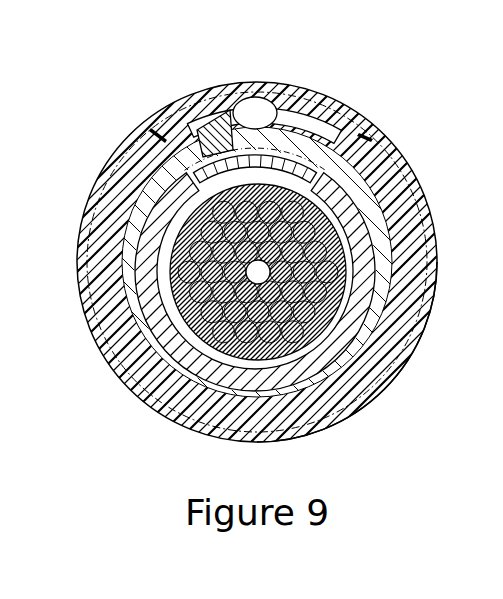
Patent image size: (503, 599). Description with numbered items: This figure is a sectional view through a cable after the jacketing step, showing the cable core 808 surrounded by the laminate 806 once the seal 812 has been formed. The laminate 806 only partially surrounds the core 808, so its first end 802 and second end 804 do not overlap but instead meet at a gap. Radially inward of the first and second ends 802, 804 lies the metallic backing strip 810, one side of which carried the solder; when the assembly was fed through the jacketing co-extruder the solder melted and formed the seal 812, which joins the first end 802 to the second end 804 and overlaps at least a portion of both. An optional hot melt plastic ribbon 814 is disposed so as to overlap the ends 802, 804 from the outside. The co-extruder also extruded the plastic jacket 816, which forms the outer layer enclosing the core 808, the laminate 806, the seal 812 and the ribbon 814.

The first end 802 is at (393, 131).
The second end 804 is at (150, 133).
The laminate 806 is at (162, 353).
The cable core 808 is at (210, 378).
The metallic backing strip 810 is at (312, 125).
The seal 812 is at (236, 108).
The hot melt plastic ribbon 814 is at (265, 103).
The plastic jacket 816 is at (380, 370).